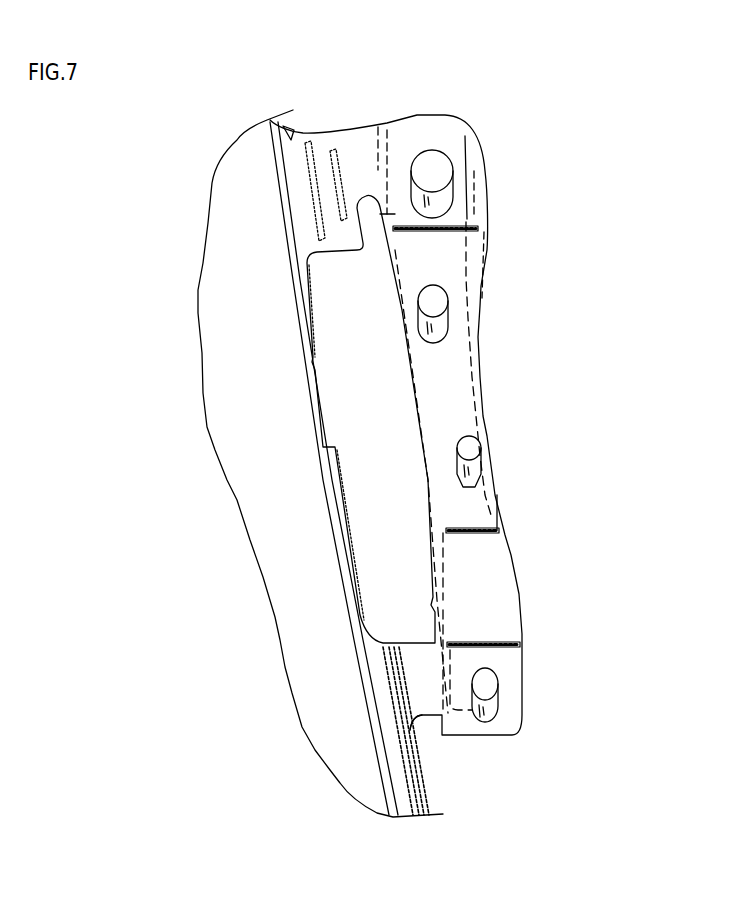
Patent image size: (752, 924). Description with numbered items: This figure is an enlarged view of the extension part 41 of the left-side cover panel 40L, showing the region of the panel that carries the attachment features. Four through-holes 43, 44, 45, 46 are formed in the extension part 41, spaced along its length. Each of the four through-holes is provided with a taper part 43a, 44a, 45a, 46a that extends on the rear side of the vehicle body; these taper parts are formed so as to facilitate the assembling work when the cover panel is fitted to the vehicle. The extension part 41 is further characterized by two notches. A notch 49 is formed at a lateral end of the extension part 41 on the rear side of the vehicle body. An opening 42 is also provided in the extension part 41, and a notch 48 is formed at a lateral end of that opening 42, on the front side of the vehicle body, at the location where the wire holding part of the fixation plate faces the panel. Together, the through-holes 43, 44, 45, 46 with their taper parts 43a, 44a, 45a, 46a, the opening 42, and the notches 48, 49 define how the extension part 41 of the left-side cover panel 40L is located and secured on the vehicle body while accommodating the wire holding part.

The left-side cover panel 40L is at (310, 655).
The extension part 41 is at (348, 143).
The opening 42 is at (357, 403).
The through-hole 43 is at (440, 162).
The taper part 43a is at (438, 211).
The through-hole 44 is at (434, 299).
The taper part 44a is at (438, 331).
The through-hole 45 is at (469, 451).
The taper part 45a is at (467, 472).
The through-hole 46 is at (484, 680).
The taper part 46a is at (484, 711).
The notch 48 is at (382, 243).
The notch 49 is at (428, 733).